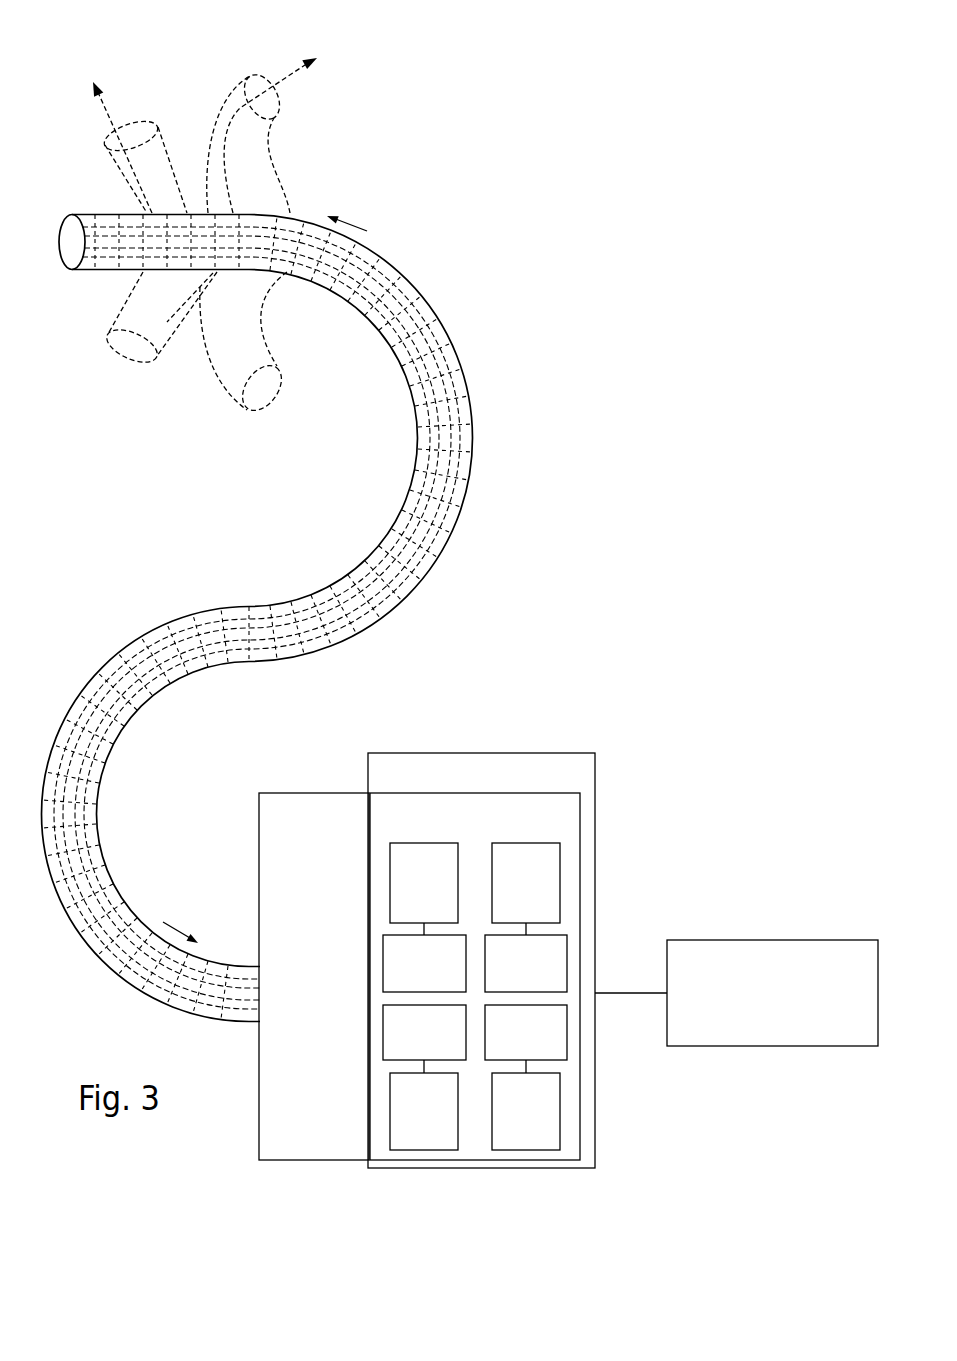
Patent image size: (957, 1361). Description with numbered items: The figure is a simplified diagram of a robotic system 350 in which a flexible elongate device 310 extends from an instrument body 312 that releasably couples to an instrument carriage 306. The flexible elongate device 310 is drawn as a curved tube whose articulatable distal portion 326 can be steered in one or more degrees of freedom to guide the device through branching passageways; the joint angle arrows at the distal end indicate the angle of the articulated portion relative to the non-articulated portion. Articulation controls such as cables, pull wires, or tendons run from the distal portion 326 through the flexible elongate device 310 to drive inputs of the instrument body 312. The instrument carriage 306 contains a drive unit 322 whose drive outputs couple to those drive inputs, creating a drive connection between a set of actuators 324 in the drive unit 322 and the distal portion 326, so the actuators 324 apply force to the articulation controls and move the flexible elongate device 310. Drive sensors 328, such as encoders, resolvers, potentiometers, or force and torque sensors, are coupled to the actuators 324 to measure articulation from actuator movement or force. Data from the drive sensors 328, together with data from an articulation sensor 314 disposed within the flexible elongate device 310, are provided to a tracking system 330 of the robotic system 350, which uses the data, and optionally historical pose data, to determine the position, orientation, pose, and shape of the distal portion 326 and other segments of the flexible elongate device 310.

The instrument carriage 306 is at (583, 783).
The flexible elongate device 310 is at (468, 375).
The instrument body 312 is at (331, 1010).
The articulation sensor 314 is at (472, 424).
The drive unit 322 is at (490, 838).
The actuators 324 is at (440, 986).
The distal portion 326 is at (79, 184).
The drive sensors 328 is at (440, 916).
The tracking system 330 is at (788, 1013).
The robotic system 350 is at (400, 152).